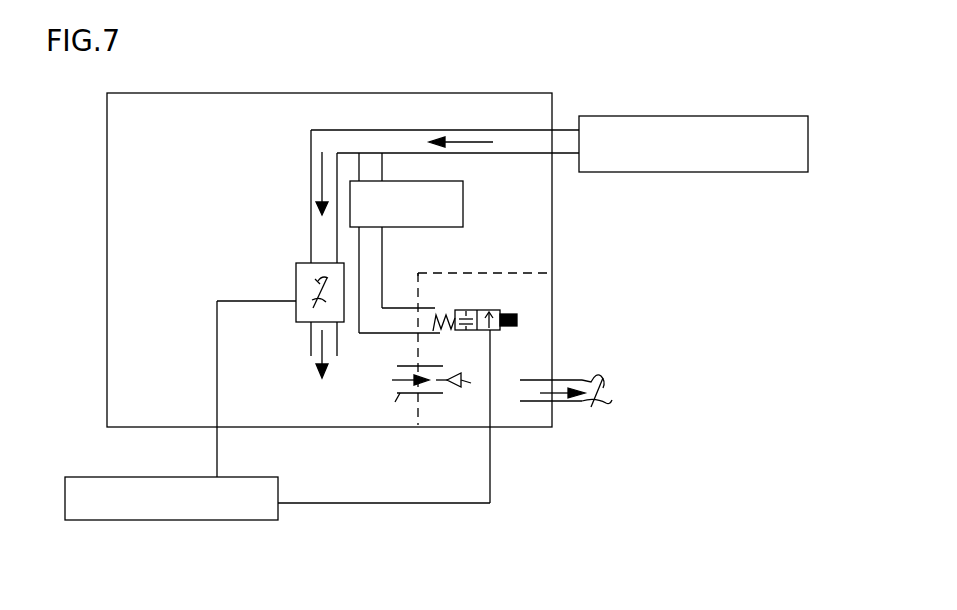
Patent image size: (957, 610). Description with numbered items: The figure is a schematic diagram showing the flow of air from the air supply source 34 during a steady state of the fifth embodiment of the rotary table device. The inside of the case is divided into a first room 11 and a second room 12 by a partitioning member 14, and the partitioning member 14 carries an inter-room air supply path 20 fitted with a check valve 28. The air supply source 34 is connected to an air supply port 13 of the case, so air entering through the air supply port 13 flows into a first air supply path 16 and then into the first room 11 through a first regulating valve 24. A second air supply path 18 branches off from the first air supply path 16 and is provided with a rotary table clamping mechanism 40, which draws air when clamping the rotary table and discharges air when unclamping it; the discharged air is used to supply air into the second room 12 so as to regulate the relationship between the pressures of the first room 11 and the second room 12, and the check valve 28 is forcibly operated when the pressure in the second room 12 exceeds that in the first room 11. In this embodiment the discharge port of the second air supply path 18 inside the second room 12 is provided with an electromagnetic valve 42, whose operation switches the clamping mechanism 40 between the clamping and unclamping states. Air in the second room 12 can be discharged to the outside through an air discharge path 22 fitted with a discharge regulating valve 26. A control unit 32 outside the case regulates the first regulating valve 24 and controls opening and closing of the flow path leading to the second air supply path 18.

The first room 11 is at (102, 412).
The second room 12 is at (517, 428).
The air supply port 13 is at (564, 128).
The partitioning member 14 is at (418, 427).
The first air supply path 16 is at (310, 205).
The second air supply path 18 is at (385, 278).
The inter-room air supply path 20 is at (402, 393).
The air discharge path 22 is at (563, 378).
The first regulating valve 24 is at (295, 315).
The discharge regulating valve 26 is at (603, 383).
The check valve 28 is at (471, 383).
The control unit 32 is at (195, 522).
The air supply source 34 is at (640, 115).
The rotary table clamping mechanism 40 is at (463, 195).
The electromagnetic valve 42 is at (500, 332).